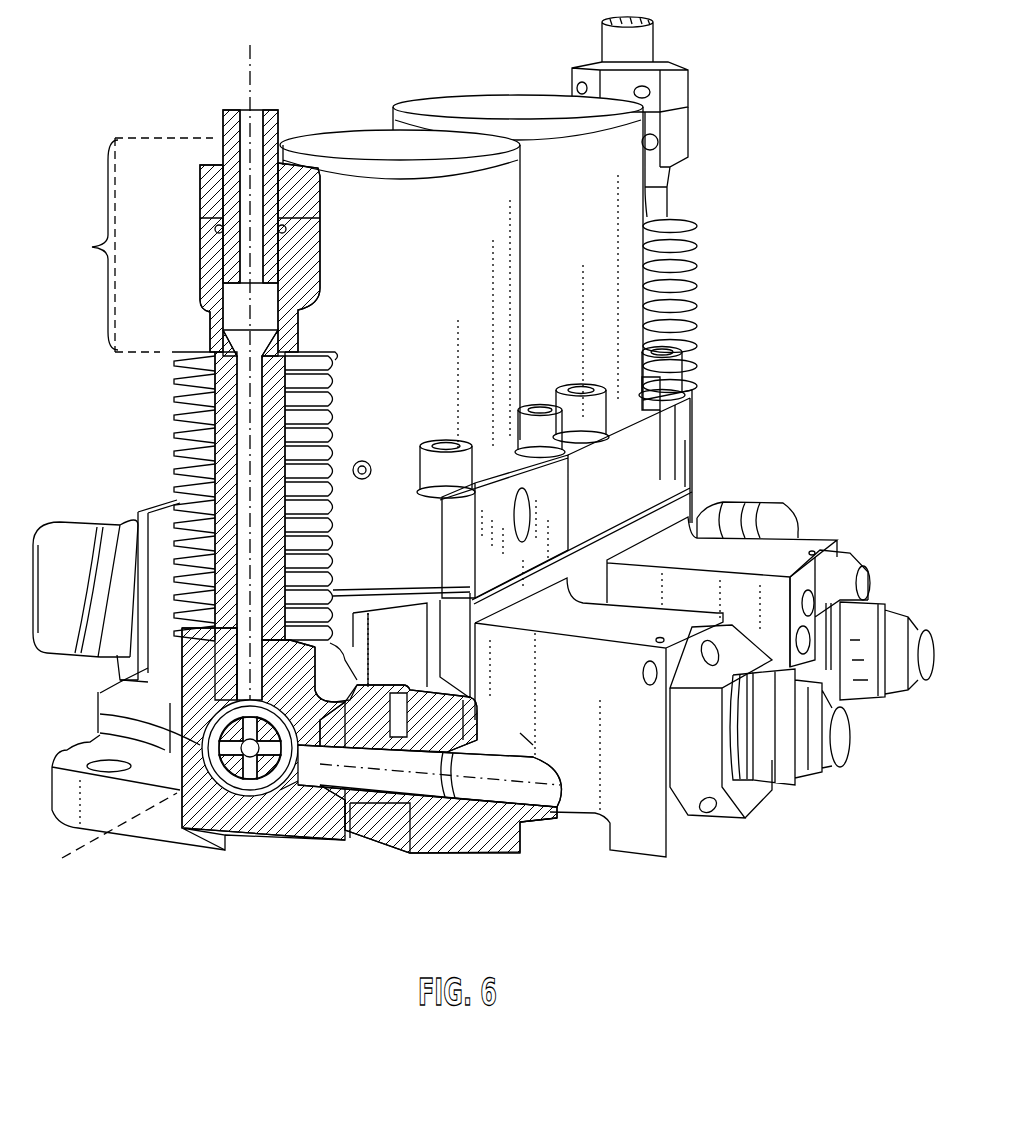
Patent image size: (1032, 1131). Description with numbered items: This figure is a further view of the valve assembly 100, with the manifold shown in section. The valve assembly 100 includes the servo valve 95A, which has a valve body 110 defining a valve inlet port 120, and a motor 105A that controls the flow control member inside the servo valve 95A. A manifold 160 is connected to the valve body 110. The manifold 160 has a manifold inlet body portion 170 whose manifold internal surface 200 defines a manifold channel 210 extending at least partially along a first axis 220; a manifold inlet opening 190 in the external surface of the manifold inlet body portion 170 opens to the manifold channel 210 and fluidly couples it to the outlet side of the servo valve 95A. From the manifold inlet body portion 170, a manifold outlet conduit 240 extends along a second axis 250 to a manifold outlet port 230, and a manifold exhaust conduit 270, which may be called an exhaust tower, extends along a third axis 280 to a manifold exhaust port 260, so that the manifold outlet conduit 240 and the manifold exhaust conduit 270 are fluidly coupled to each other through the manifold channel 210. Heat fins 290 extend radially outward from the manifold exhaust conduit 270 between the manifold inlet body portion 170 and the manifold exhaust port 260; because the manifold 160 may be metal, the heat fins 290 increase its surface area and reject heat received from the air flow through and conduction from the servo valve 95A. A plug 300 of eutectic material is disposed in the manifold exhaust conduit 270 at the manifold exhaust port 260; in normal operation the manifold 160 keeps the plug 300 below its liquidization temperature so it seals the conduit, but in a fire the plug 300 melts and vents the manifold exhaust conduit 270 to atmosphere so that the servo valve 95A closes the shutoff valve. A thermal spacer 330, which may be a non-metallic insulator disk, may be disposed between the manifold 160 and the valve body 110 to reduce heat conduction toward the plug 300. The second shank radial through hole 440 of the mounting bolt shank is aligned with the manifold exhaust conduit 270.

The valve assembly 100 is at (790, 62).
The motor 105A is at (350, 135).
The valve body 110 is at (626, 848).
The valve inlet port 120 is at (842, 742).
The manifold 160 is at (191, 399).
The manifold inlet body portion 170 is at (298, 749).
The manifold inlet opening 190 is at (200, 760).
The manifold internal surface 200 is at (120, 682).
The manifold channel 210 is at (100, 714).
The first axis 220 is at (65, 862).
The manifold outlet port 230 is at (444, 800).
The manifold outlet conduit 240 is at (345, 832).
The second axis 250 is at (555, 801).
The manifold exhaust port 260 is at (128, 245).
The manifold exhaust conduit 270 is at (200, 295).
The third axis 280 is at (253, 70).
The heat fins 290 is at (175, 418).
The plug 300 is at (245, 140).
The thermal spacer 330 is at (347, 690).
The second shank radial through hole 440 is at (250, 712).
The servo valve 95A is at (660, 800).